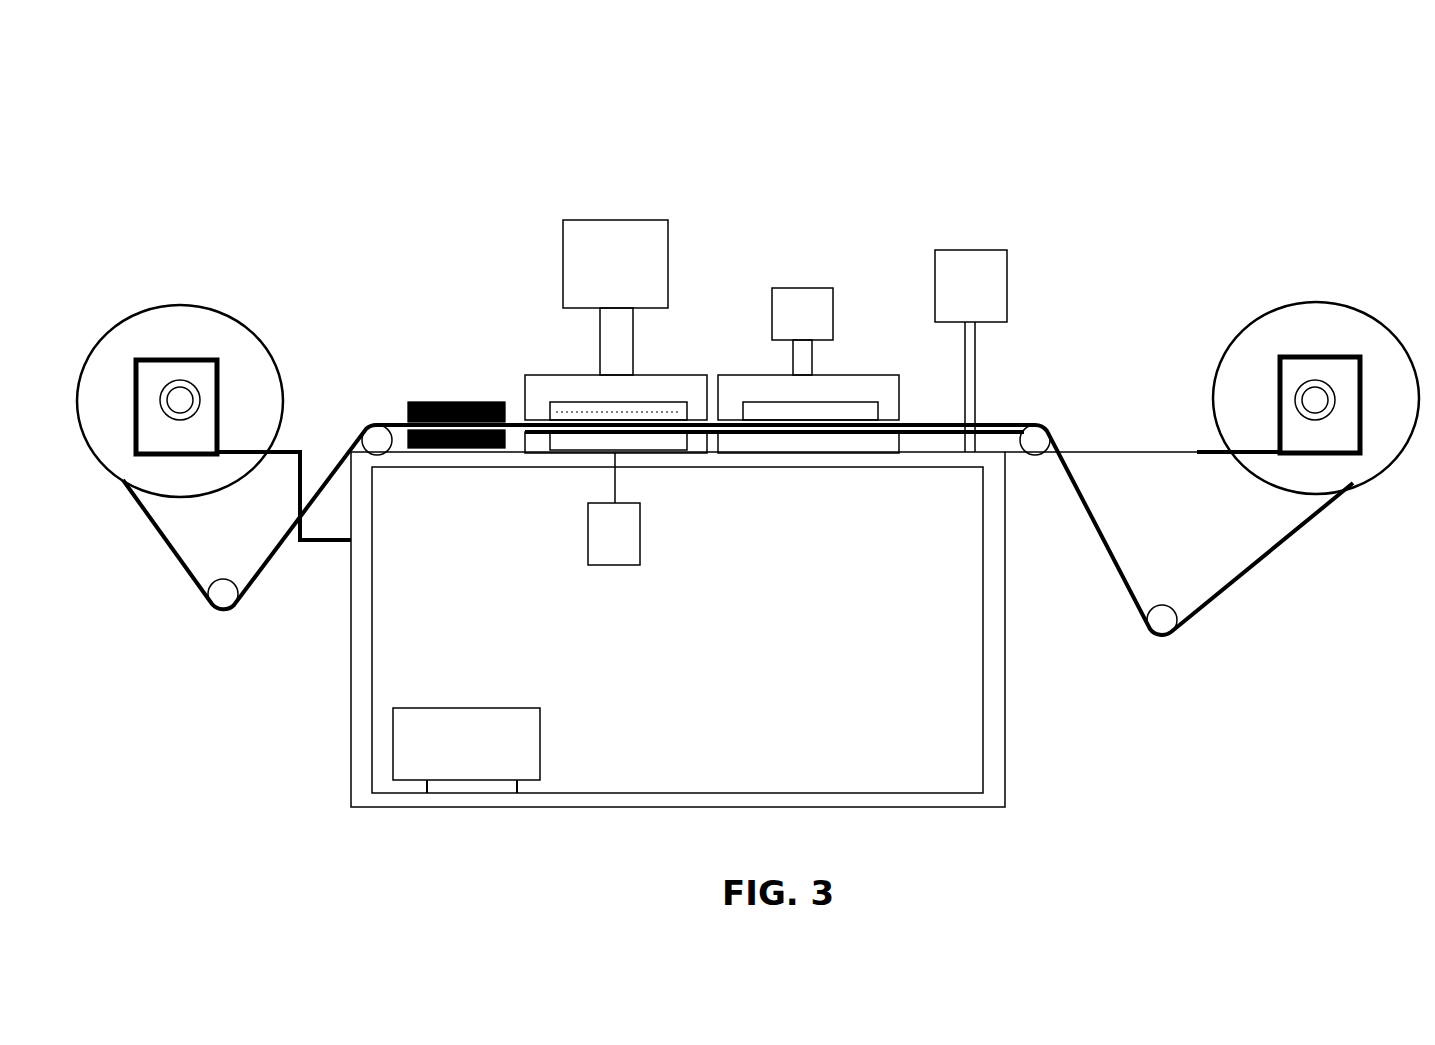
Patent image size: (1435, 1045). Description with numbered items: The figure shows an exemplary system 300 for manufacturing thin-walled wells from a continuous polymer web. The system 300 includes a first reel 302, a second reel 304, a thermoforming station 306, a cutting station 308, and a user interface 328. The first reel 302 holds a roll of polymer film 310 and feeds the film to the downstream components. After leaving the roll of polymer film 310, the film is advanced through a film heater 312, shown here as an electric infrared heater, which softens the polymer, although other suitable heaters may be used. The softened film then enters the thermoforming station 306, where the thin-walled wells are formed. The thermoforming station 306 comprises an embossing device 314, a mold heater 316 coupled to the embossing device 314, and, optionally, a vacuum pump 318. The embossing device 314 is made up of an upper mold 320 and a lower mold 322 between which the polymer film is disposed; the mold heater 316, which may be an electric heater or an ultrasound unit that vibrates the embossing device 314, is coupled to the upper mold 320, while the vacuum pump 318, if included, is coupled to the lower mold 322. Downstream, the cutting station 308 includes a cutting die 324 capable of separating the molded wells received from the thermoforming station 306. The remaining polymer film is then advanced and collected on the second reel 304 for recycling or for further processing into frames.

The system 300 is at (302, 137).
The first reel 302 is at (185, 400).
The second reel 304 is at (1312, 405).
The thermoforming station 306 is at (585, 345).
The cutting station 308 is at (840, 320).
The polymer film 310 is at (112, 453).
The film heater 312 is at (437, 400).
The embossing device 314 is at (528, 365).
The mold heater 316 is at (612, 243).
The vacuum pump 318 is at (612, 547).
The upper mold 320 is at (693, 377).
The lower mold 322 is at (540, 438).
The cutting die 324 is at (875, 377).
The user interface 328 is at (1010, 245).